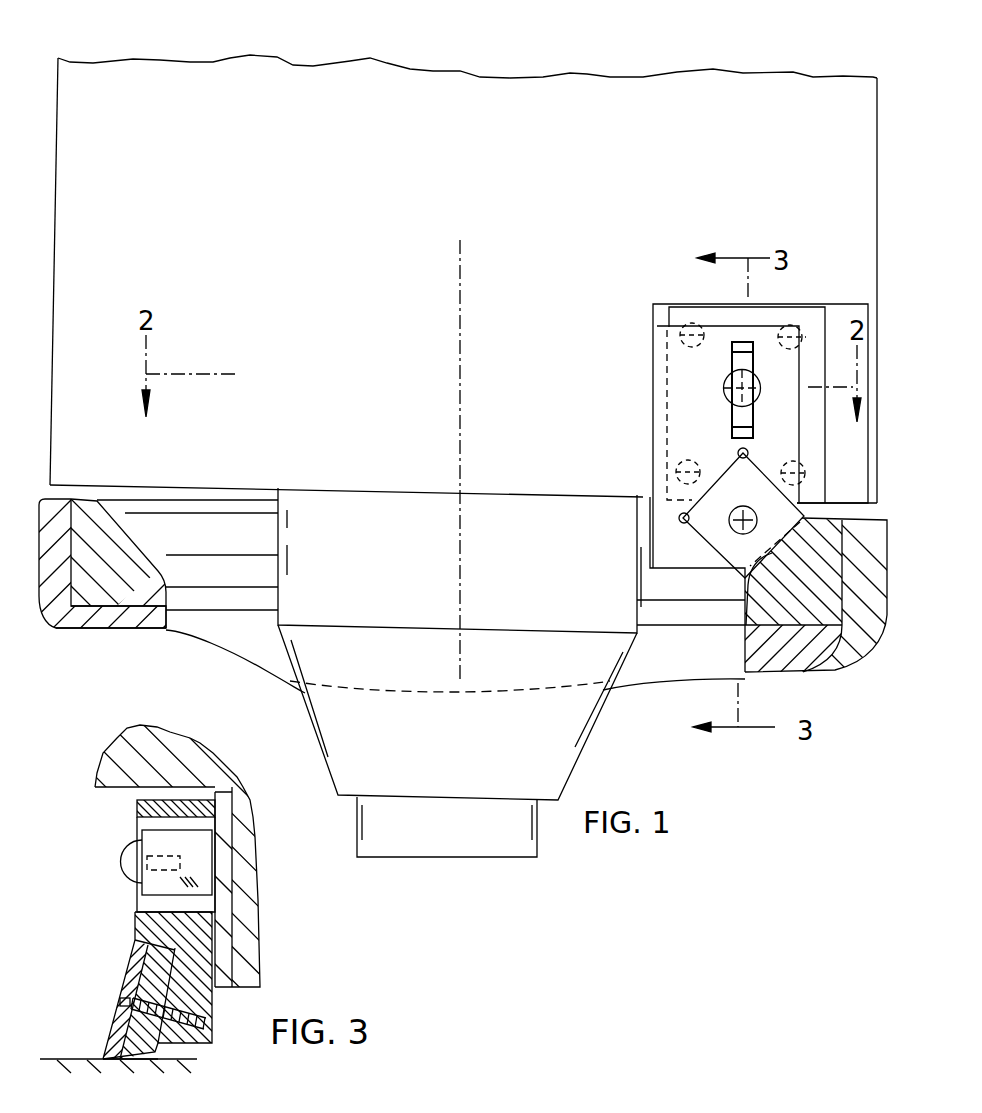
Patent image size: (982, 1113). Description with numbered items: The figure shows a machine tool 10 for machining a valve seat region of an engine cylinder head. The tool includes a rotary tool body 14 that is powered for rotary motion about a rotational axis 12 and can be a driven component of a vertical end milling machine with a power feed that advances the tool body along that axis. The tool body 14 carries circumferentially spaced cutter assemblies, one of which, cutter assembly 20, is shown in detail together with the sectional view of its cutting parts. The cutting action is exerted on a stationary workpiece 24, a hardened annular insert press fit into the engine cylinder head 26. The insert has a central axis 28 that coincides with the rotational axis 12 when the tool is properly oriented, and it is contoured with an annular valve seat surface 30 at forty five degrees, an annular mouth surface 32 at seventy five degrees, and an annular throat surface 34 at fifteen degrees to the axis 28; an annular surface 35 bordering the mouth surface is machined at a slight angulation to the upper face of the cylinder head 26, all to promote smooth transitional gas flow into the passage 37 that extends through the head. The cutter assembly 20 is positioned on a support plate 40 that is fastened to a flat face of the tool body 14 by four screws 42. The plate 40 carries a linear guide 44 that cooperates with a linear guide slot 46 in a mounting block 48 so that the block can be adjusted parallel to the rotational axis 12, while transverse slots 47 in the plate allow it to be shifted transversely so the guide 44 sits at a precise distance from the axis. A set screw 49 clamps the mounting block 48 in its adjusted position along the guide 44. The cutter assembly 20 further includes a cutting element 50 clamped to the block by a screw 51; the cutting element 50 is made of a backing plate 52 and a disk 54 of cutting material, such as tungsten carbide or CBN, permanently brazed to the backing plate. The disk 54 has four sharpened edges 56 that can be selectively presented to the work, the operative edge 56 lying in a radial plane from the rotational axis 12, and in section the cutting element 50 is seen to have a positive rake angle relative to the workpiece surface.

In FIG. 1, the machine tool 10 is at (581, 69).
In FIG. 1, the rotational axis 12 is at (462, 290).
In FIG. 1, the rotary tool body 14 is at (467, 53).
In FIG. 1, the cutter assembly 20 is at (653, 476).
In FIG. 1, the workpiece 24 is at (130, 627).
In FIG. 1, the engine cylinder head 26 is at (83, 630).
In FIG. 1, the axis 28 is at (460, 650).
In FIG. 1, the annular valve seat surface 30 is at (143, 537).
In FIG. 1, the annular mouth surface 32 is at (97, 507).
In FIG. 1, the annular throat surface 34 is at (166, 573).
In FIG. 1, the annular surface 35 is at (53, 498).
In FIG. 1, the passage 37 is at (730, 665).
In FIG. 1, the support plate 40 is at (705, 305).
In FIG. 3, the support plate 40 is at (225, 858).
In FIG. 1, the screws 42 is at (680, 342).
In FIG. 1, the linear guide 44 is at (722, 414).
In FIG. 3, the linear guide 44 is at (142, 838).
In FIG. 1, the linear guide slot 46 is at (722, 437).
In FIG. 3, the linear guide slot 46 is at (140, 823).
In FIG. 1, the transverse slots 47 is at (650, 340).
In FIG. 1, the mounting block 48 is at (788, 428).
In FIG. 3, the mounting block 48 is at (215, 808).
In FIG. 1, the set screw 49 is at (722, 390).
In FIG. 3, the set screw 49 is at (195, 866).
In FIG. 1, the cutting element 50 is at (735, 566).
In FIG. 3, the cutting element 50 is at (165, 970).
In FIG. 1, the screw 51 is at (740, 522).
In FIG. 3, the screw 51 is at (123, 997).
In FIG. 3, the backing plate 52 is at (178, 990).
In FIG. 3, the disk 54 is at (128, 958).
In FIG. 1, the sharpened edges 56 is at (745, 617).
In FIG. 3, the sharpened edges 56 is at (104, 1058).